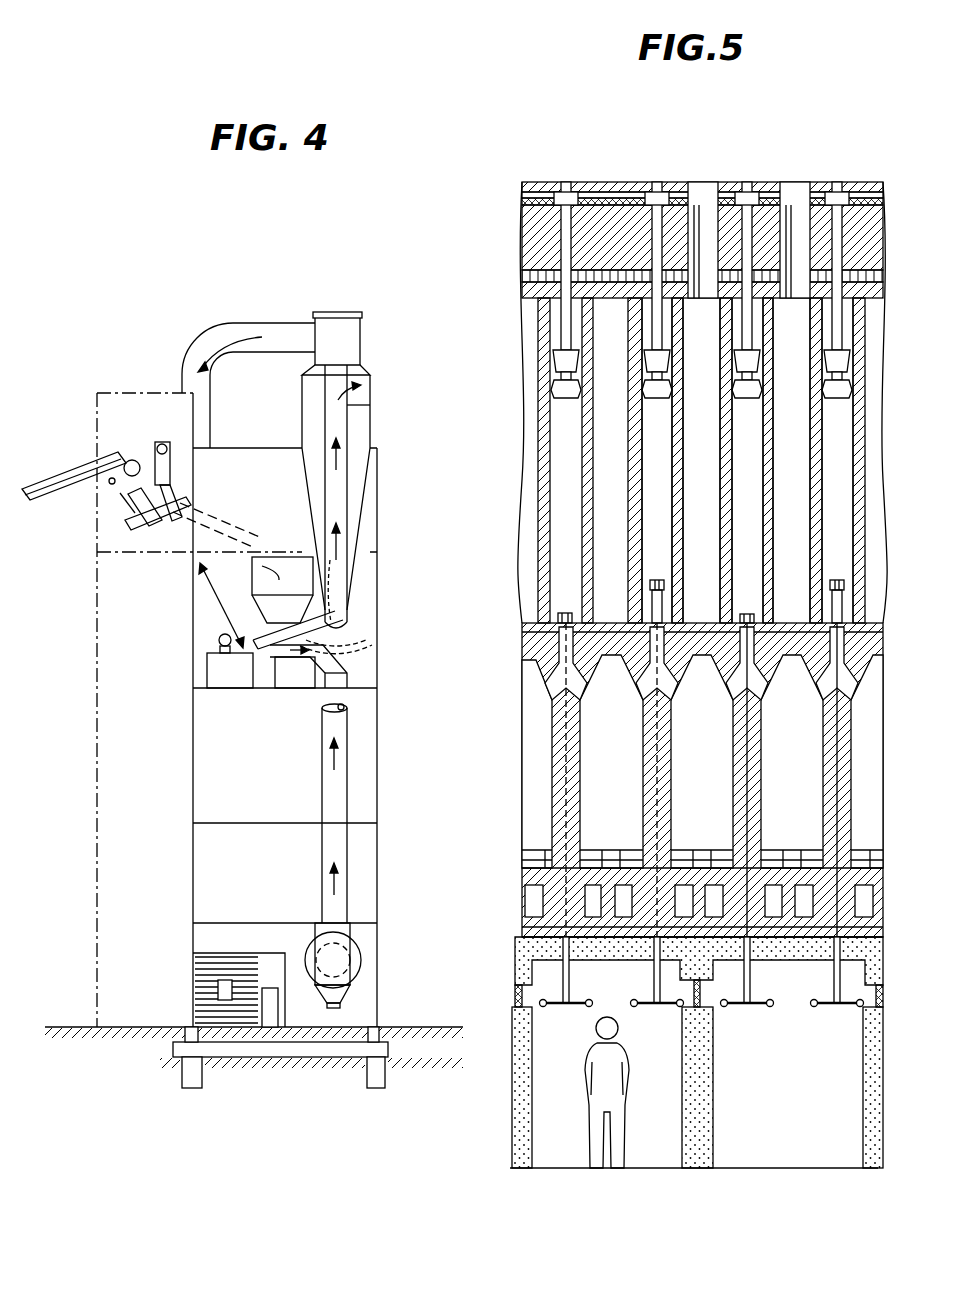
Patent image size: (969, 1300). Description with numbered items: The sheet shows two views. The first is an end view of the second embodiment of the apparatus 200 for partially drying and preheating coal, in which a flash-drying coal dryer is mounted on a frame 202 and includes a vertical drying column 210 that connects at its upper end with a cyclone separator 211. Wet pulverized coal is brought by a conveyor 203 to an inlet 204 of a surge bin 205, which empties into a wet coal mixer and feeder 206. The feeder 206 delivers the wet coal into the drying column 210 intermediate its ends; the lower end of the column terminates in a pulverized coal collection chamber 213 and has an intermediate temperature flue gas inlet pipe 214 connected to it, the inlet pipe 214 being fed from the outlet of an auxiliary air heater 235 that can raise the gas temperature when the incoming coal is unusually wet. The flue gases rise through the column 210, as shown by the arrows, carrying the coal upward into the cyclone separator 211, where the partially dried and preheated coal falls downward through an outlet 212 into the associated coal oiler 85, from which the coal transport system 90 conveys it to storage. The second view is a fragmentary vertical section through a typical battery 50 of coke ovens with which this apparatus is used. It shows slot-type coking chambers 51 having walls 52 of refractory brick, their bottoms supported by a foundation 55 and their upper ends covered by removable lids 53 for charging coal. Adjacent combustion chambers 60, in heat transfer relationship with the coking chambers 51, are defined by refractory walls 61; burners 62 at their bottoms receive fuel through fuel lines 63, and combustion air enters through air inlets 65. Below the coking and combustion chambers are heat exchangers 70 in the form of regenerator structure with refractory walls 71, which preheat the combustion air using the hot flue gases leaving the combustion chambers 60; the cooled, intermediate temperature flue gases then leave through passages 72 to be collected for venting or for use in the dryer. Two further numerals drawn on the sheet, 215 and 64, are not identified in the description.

In FIG. 4, the apparatus for partially drying and preheating coal 200 is at (100, 254).
In FIG. 4, the frame 202 is at (377, 792).
In FIG. 4, the conveyor 203 is at (55, 478).
In FIG. 4, the inlet 204 is at (278, 582).
In FIG. 4, the surge bin 205 is at (268, 583).
In FIG. 4, the wet coal mixer and feeder 206 is at (333, 662).
In FIG. 4, the coal oiler 85 is at (210, 668).
In FIG. 4, the coal transport system 90 is at (198, 596).
In FIG. 4, the vertical drying column 210 is at (348, 608).
In FIG. 4, the cyclone separator 211 is at (368, 432).
In FIG. 4, the outlet 212 is at (340, 641).
In FIG. 4, the pulverized coal collection chamber 213 is at (313, 958).
In FIG. 4, the intermediate temperature flue gas inlet pipe 214 is at (345, 947).
In FIG. 4, the return air duct 215 is at (268, 335).
In FIG. 4, the auxiliary air heater 235 is at (355, 968).
In FIG. 5, the battery of coke ovens 50 is at (596, 148).
In FIG. 5, the coking chambers 51 is at (714, 462).
In FIG. 5, the walls 52 is at (722, 370).
In FIG. 5, the removable lids 53 is at (700, 182).
In FIG. 5, the foundation 55 is at (512, 1103).
In FIG. 5, the combustion chambers 60 is at (670, 501).
In FIG. 5, the walls 61 is at (671, 450).
In FIG. 5, the burners 62 is at (655, 580).
In FIG. 5, the fuel lines 63 is at (572, 1002).
In FIG. 5, the central tube 64 is at (760, 492).
In FIG. 5, the air inlets 65 is at (793, 918).
In FIG. 5, the heat exchangers 70 is at (540, 774).
In FIG. 5, the walls 71 is at (641, 745).
In FIG. 5, the passages 72 is at (712, 886).